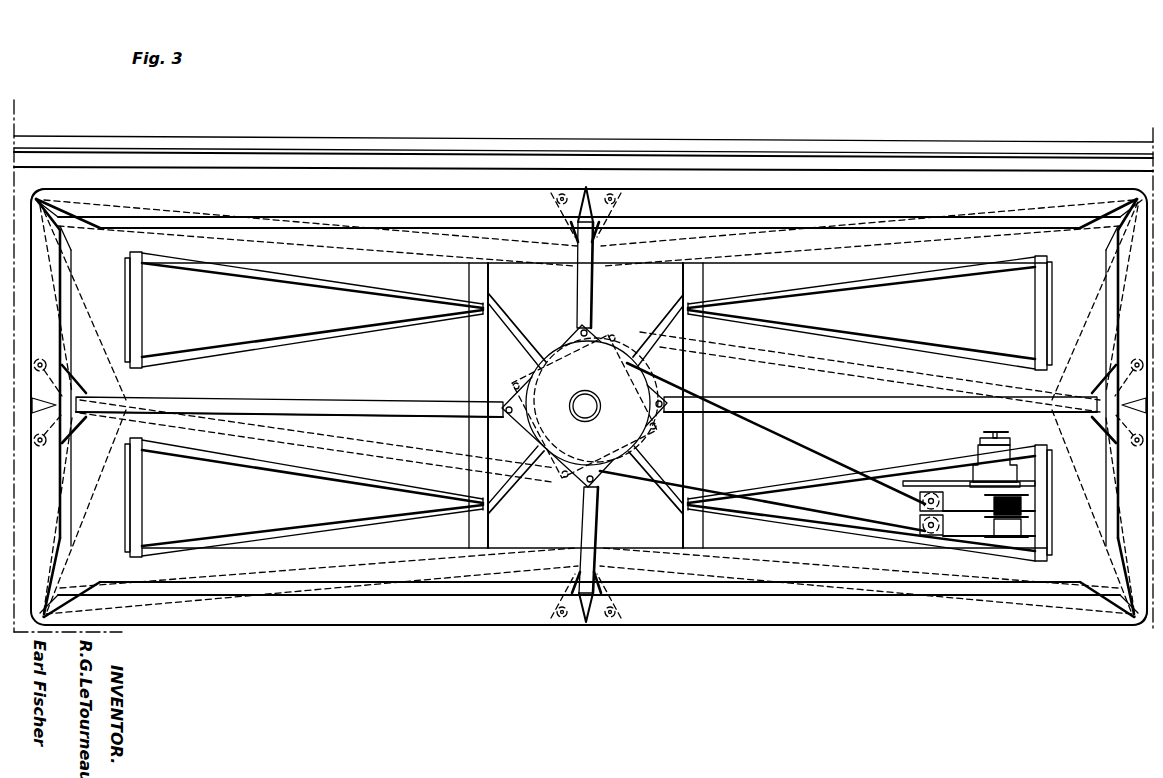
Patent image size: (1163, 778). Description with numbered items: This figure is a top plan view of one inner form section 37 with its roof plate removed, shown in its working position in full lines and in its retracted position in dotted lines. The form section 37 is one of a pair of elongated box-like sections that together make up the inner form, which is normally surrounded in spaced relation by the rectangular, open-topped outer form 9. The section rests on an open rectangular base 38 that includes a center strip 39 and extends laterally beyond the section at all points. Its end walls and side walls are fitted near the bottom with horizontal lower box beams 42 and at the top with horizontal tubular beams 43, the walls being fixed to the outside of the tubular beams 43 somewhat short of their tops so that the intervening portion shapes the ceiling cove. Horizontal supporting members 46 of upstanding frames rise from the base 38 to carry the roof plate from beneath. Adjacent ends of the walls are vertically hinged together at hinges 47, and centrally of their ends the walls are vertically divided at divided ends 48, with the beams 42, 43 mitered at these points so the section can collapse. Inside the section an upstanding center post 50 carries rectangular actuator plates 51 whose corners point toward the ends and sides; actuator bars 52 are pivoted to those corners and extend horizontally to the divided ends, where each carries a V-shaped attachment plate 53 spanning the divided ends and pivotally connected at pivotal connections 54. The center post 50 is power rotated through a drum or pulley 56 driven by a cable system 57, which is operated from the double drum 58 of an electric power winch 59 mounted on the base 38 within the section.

The outer form 9 is at (872, 169).
The form section 37 is at (710, 193).
The rectangular base 38 is at (418, 256).
The center strip 39 is at (727, 562).
The lower box beam 42 is at (68, 279).
The tubular beam 43 is at (473, 208).
The horizontal supporting member 46 is at (252, 345).
The hinge 47 is at (37, 196).
The divided end 48 is at (586, 195).
The center post 50 is at (594, 399).
The actuator plate 51 is at (590, 360).
The actuator bar 52 is at (588, 260).
The V-shaped attachment plate 53 is at (76, 390).
The pivotal connection 54 is at (40, 360).
The drum or pulley 56 is at (528, 406).
The cable system 57 is at (723, 493).
The double drum 58 is at (1000, 523).
The electric power winch 59 is at (994, 468).